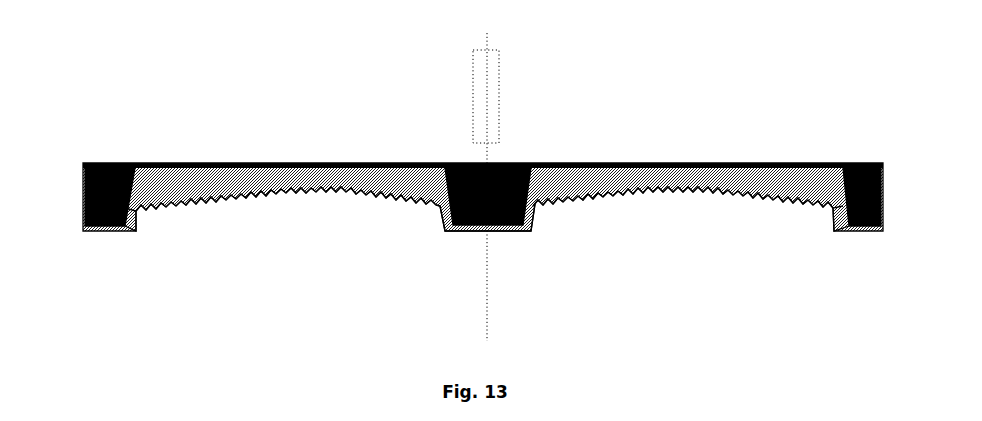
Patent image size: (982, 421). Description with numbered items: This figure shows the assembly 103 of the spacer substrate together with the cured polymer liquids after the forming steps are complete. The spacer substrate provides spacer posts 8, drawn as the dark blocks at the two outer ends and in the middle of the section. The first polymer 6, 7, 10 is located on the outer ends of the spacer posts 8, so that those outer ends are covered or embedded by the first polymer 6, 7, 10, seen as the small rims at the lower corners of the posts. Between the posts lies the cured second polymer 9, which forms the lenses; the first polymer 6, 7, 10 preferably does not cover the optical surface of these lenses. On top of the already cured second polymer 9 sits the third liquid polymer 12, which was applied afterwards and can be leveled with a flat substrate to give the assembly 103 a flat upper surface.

The assembly 103 is at (178, 130).
The third liquid polymer 12 is at (797, 157).
The spacer posts 8 is at (75, 183).
The first polymer 7 is at (123, 225).
The first polymer 10 is at (832, 225).
The first polymer 6 is at (437, 222).
The second polymer 9 is at (325, 193).